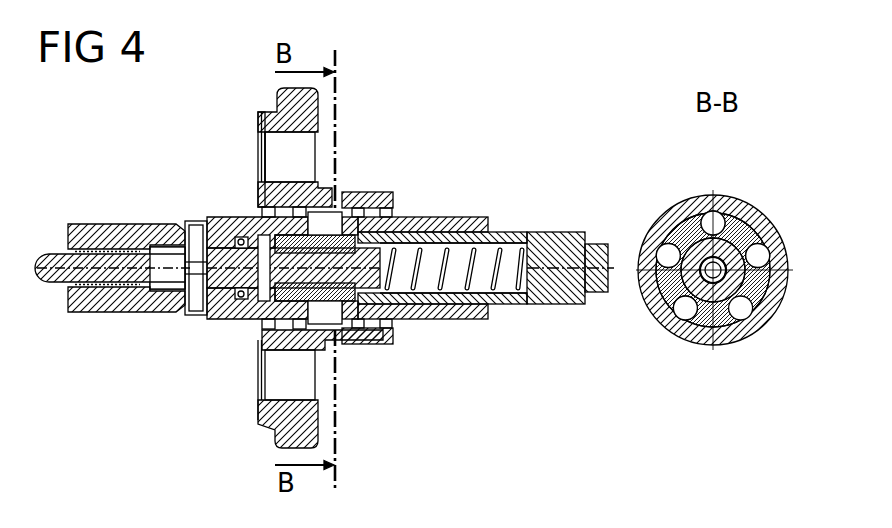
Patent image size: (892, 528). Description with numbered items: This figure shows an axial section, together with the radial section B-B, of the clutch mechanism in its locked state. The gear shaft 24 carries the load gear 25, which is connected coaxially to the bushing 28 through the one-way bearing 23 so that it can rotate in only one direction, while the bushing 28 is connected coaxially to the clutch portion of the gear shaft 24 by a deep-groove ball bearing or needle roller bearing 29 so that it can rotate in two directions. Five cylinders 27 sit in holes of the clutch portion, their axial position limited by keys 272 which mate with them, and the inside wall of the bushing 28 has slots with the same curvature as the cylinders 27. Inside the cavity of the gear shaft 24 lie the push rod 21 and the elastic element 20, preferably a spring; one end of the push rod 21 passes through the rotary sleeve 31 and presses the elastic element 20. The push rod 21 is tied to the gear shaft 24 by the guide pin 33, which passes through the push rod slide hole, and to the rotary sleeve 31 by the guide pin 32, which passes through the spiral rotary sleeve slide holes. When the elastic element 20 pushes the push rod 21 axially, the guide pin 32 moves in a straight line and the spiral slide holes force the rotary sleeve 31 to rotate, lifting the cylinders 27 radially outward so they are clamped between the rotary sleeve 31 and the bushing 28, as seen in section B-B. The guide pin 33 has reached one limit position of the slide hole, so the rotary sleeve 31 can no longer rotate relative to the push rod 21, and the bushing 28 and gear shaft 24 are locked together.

The elastic element 20 is at (425, 284).
The push rod 21 is at (57, 254).
The one-way bearing 23 is at (283, 147).
The gear shaft 24 is at (110, 236).
The load gear 25 is at (272, 410).
The cylinders 27 is at (335, 218).
The bushing 28 is at (263, 194).
The deep-groove ball bearing or needle roller bearing 29 is at (372, 210).
The rotary sleeve 31 is at (345, 340).
The guide pin 32 is at (246, 310).
The guide pin 33 is at (191, 224).
The keys 272 is at (273, 200).